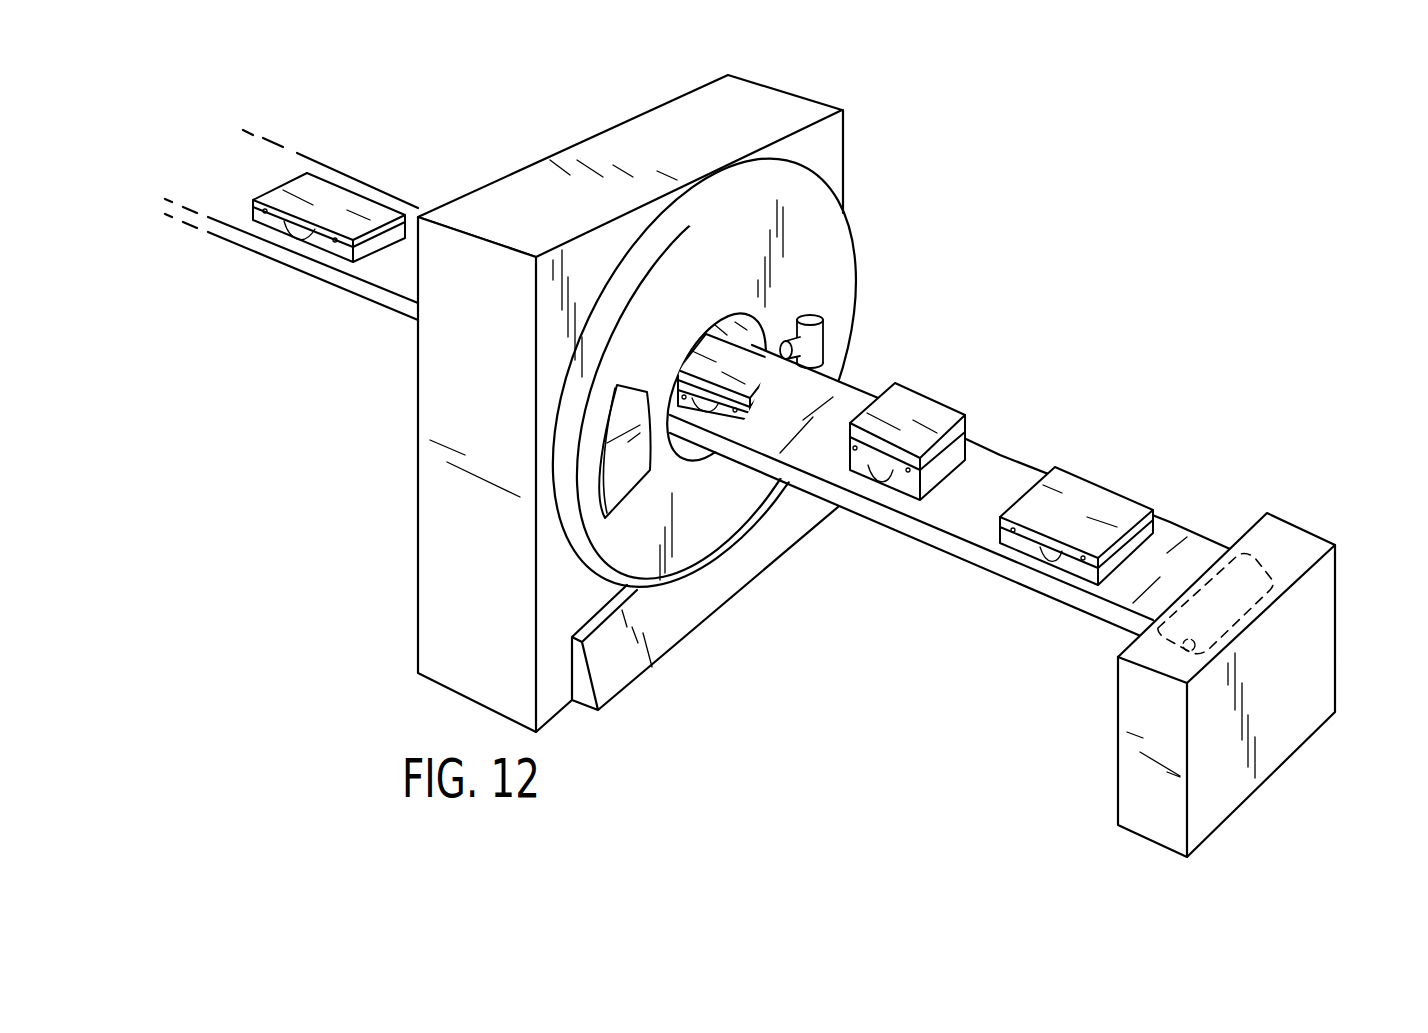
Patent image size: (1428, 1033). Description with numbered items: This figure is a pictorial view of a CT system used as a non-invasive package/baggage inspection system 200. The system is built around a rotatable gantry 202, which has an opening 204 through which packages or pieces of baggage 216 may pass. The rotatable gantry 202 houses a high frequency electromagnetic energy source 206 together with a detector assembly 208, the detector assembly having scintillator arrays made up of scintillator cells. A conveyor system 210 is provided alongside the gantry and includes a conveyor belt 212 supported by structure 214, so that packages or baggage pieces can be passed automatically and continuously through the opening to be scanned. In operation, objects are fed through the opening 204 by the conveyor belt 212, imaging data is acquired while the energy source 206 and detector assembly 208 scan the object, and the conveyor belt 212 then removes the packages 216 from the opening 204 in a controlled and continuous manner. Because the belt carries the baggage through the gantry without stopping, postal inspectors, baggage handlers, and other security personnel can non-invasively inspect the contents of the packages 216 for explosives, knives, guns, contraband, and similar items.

The package/baggage inspection system 200 is at (1116, 265).
The rotatable gantry 202 is at (838, 253).
The opening 204 is at (740, 325).
The high frequency electromagnetic energy source 206 is at (823, 340).
The detector assembly 208 is at (618, 487).
The conveyor system 210 is at (158, 247).
The conveyor belt 212 is at (1003, 456).
The structure 214 is at (1322, 646).
The packages or pieces of baggage 216 is at (343, 202).